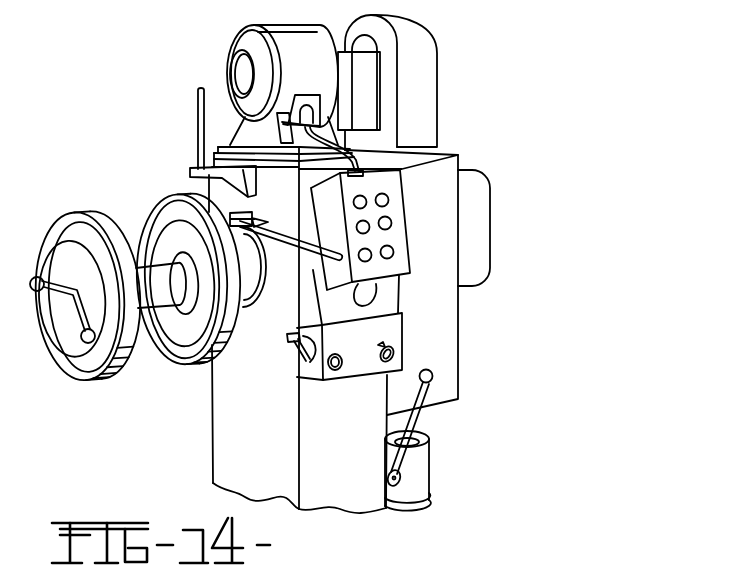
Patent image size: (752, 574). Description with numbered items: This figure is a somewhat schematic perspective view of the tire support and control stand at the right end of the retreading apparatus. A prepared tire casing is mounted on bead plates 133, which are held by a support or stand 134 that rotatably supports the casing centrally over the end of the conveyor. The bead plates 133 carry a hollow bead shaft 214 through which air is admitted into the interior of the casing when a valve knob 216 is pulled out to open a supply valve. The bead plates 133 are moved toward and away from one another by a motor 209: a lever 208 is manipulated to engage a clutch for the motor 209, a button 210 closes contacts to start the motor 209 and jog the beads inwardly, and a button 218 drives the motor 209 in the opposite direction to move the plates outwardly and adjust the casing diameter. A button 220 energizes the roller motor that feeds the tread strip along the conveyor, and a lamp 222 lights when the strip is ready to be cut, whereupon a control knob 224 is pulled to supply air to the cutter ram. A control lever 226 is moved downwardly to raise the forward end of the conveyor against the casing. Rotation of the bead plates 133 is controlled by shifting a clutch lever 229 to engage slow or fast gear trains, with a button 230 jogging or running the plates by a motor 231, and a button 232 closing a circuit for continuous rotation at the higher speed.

The bead plates 133 is at (198, 371).
The support or stand 134 is at (213, 440).
The lever 208 is at (284, 231).
The motor 209 is at (235, 43).
The button 210 is at (360, 196).
The hollow bead shaft 214 is at (168, 294).
The valve knob 216 is at (368, 221).
The button 218 is at (334, 352).
The button 220 is at (370, 250).
The lamp 222 is at (393, 252).
The control knob 224 is at (372, 357).
The control lever 226 is at (297, 356).
The clutch lever 229 is at (412, 422).
The button 230 is at (389, 197).
The motor 231 is at (429, 460).
The button 232 is at (391, 222).